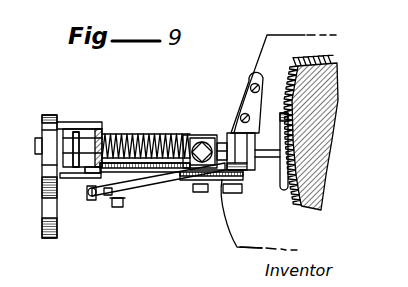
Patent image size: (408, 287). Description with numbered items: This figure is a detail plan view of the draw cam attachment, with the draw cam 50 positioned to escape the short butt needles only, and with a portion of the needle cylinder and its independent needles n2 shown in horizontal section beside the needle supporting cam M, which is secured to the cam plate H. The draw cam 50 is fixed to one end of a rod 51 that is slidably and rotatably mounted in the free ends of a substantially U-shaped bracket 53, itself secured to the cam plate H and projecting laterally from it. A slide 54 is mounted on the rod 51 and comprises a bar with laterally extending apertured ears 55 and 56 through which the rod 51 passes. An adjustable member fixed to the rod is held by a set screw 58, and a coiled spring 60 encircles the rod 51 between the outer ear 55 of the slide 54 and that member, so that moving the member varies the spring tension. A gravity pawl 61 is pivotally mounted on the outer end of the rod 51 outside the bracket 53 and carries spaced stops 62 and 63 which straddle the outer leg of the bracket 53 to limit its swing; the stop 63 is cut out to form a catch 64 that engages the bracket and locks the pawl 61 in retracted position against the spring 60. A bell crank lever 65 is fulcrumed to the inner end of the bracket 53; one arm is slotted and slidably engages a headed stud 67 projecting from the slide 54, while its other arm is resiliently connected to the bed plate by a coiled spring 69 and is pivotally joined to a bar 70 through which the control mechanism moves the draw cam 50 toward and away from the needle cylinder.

The draw cam 50 is at (283, 113).
The rod 51 is at (247, 132).
The U-shaped bracket 53 is at (230, 128).
The slide 54 is at (160, 172).
The apertured ear 55 is at (97, 125).
The apertured ear 56 is at (220, 132).
The set screw 58 is at (197, 134).
The coiled spring 60 is at (119, 133).
The gravity pawl 61 is at (50, 158).
The stop 62 is at (68, 125).
The stop 63 is at (56, 188).
The catch 64 is at (77, 175).
The bell crank lever 65 is at (136, 204).
The headed stud 67 is at (207, 194).
The coiled spring 69 is at (95, 205).
The bar 70 is at (107, 205).
The cam plate H is at (238, 220).
The needle supporting cam M is at (261, 236).
The needles n2 is at (314, 120).